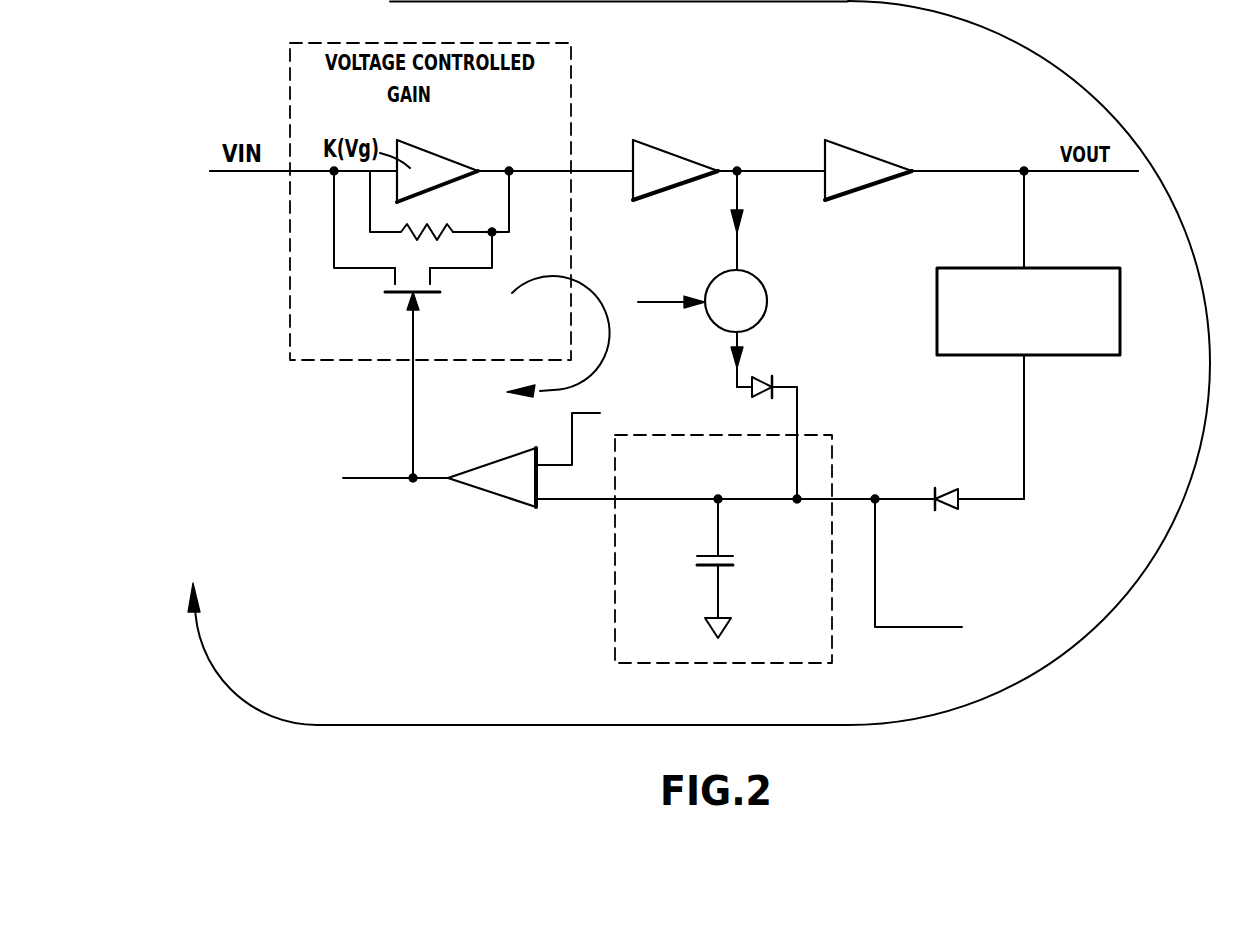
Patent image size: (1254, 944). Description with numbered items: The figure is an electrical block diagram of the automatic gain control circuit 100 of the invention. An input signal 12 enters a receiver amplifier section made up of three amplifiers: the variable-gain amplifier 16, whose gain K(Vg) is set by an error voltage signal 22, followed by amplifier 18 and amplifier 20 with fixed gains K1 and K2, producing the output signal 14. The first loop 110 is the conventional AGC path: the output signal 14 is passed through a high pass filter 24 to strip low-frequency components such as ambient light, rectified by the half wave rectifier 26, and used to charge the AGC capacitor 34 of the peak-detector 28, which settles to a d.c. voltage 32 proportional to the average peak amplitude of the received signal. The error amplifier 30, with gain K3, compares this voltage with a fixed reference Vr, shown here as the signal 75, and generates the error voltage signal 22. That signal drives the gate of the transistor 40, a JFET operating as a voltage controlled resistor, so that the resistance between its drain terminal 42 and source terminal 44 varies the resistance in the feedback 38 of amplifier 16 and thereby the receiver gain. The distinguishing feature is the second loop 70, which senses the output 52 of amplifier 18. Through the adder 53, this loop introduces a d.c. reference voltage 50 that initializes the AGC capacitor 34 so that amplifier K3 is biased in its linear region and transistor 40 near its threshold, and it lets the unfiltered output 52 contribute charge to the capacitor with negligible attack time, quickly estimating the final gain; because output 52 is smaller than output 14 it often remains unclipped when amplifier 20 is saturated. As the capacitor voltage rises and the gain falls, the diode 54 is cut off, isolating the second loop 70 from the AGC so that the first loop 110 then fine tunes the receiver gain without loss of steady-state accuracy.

The input signal 12 is at (262, 173).
The output signal 14 is at (1052, 172).
The amplifier 16 is at (423, 147).
The amplifier 18 is at (660, 148).
The amplifier 20 is at (845, 147).
The error voltage signal 22 is at (418, 393).
The high pass filter 24 is at (1120, 304).
The rectifier 26 is at (960, 507).
The peak-detector 28 is at (761, 530).
The error amplifier 30 is at (505, 500).
The d.c. voltage 32 is at (880, 629).
The AGC capacitor 34 is at (725, 563).
The feedback 38 is at (510, 199).
The transistor 40 is at (402, 252).
The drain terminal 42 is at (433, 275).
The source terminal 44 is at (392, 277).
The d.c. reference voltage 50 is at (681, 310).
The output 52 is at (739, 197).
The adder 53 is at (757, 313).
The diode 54 is at (773, 380).
The second loop 70 is at (556, 362).
The threshold voltage Vr line 75 is at (598, 413).
The automatic gain control circuit 100 is at (392, 560).
The first loop 110 is at (1152, 562).